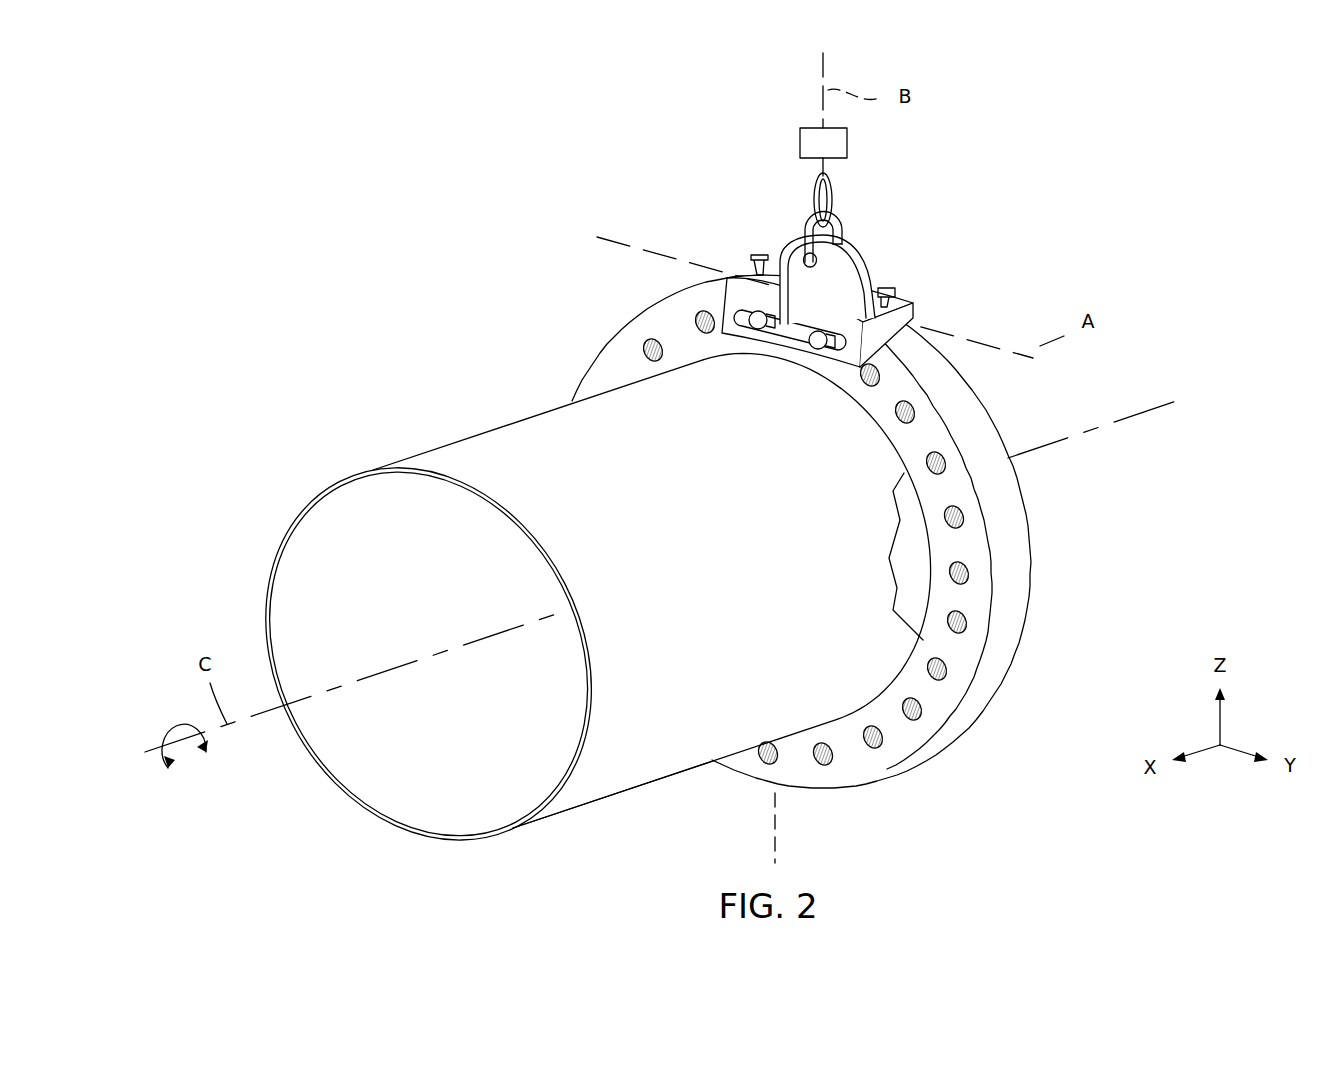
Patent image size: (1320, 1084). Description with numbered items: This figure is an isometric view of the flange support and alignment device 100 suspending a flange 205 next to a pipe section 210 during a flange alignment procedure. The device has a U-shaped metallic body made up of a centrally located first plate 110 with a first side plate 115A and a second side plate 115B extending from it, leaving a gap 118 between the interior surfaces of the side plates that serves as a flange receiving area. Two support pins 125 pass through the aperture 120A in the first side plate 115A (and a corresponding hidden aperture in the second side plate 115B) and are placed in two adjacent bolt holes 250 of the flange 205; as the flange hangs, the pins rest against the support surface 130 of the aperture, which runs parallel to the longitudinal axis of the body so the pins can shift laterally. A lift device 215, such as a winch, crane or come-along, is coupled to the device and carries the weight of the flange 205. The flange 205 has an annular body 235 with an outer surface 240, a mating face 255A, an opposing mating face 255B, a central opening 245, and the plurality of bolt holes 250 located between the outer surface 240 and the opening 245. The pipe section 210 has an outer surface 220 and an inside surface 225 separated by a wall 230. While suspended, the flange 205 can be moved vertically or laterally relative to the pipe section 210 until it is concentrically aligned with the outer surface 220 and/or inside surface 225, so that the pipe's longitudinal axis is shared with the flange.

The flange support and alignment device 100 is at (858, 329).
The first plate 110 is at (882, 268).
The first side plate 115A is at (846, 358).
The second side plate 115B is at (913, 320).
The gap 118 is at (910, 352).
The aperture 120A is at (820, 352).
The support pins 125 is at (858, 370).
The support surface 130 is at (785, 327).
The flange 205 is at (1032, 496).
The pipe section 210 is at (630, 655).
The lift device 215 is at (810, 154).
The outer surface 220 is at (655, 783).
The inside surface 225 is at (382, 777).
The wall 230 is at (422, 842).
The body 235 is at (952, 352).
The outer surface 240 is at (1008, 545).
The opening 245 is at (905, 556).
The bolt holes 250 is at (646, 352).
The mating face 255A is at (1040, 590).
The opposing mating face 255B is at (935, 704).